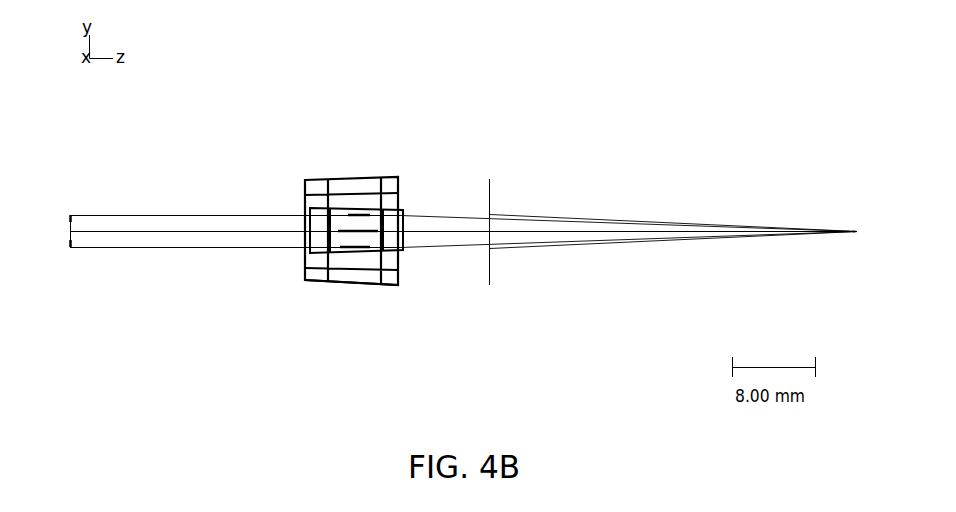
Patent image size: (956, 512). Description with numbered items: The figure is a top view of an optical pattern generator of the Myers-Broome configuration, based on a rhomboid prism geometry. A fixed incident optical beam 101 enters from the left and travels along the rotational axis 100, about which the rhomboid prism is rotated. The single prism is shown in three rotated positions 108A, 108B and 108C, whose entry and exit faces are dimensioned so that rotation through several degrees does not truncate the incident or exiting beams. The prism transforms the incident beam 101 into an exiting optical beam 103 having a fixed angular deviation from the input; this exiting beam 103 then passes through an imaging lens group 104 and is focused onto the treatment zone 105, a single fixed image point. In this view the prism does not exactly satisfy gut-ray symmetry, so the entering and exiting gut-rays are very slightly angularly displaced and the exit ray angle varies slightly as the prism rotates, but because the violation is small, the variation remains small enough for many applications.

The rotational axis 100 is at (73, 230).
The incident optical beam 101 is at (130, 232).
The exiting optical beam 103 is at (433, 235).
The imaging lens group 104 is at (490, 270).
The treatment zone 105 is at (857, 231).
The rhomboid prism first rotated position 108A is at (388, 177).
The rhomboid prism second rotated position 108B is at (403, 222).
The rhomboid prism third rotated position 108C is at (387, 288).